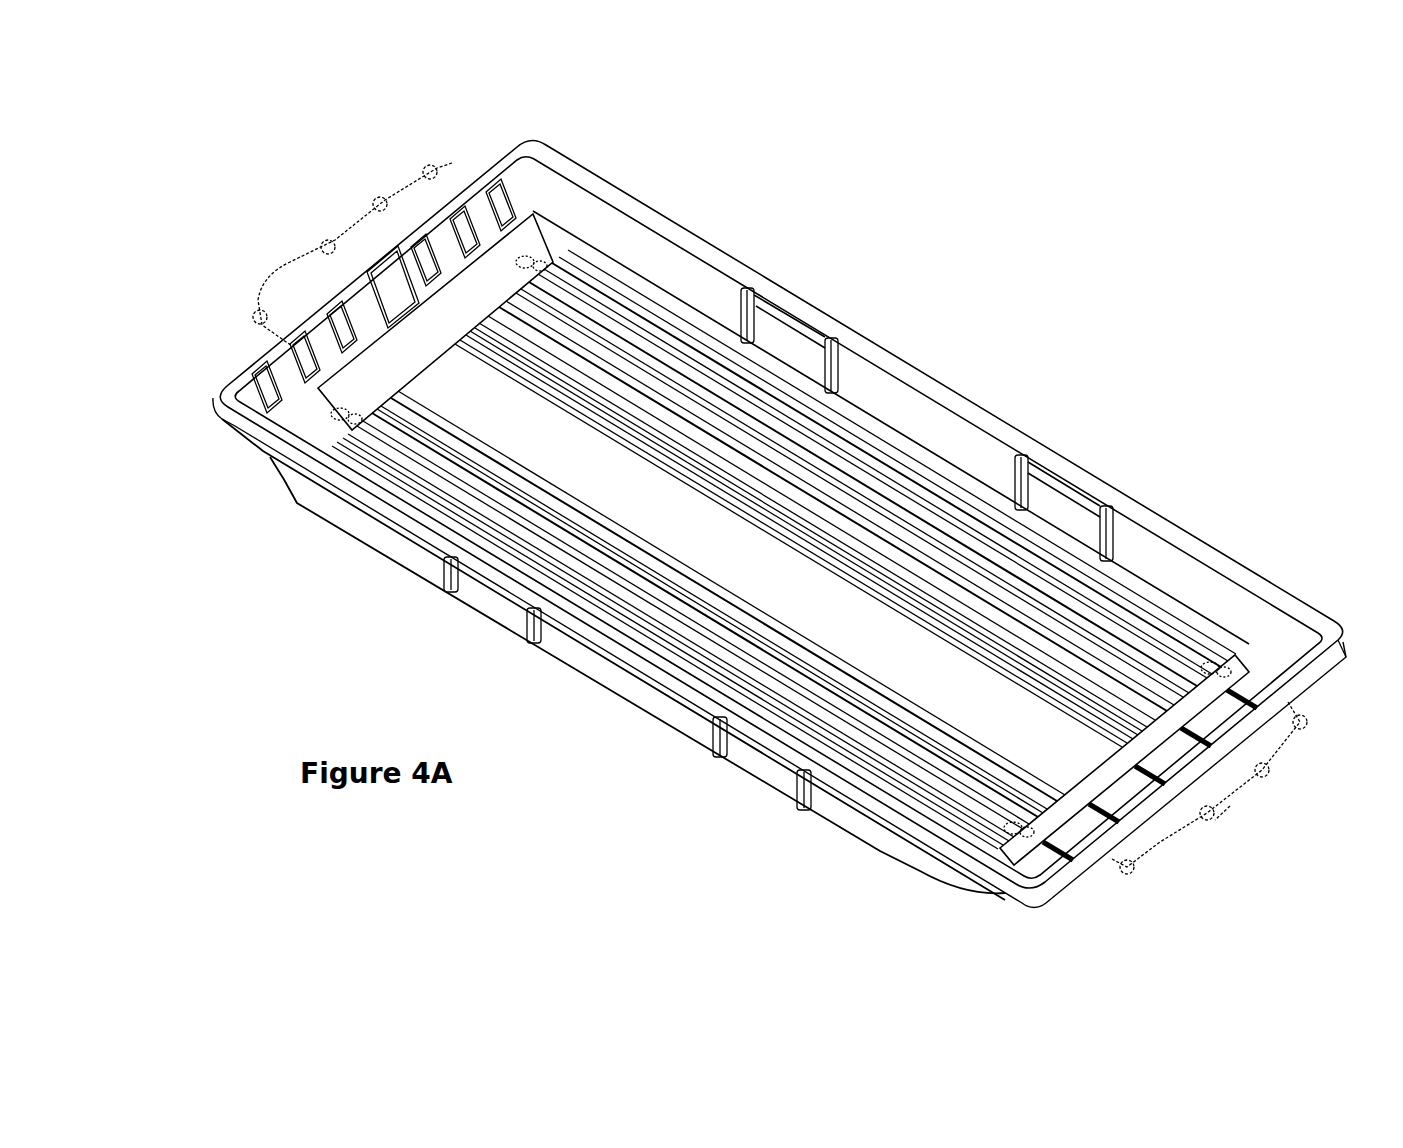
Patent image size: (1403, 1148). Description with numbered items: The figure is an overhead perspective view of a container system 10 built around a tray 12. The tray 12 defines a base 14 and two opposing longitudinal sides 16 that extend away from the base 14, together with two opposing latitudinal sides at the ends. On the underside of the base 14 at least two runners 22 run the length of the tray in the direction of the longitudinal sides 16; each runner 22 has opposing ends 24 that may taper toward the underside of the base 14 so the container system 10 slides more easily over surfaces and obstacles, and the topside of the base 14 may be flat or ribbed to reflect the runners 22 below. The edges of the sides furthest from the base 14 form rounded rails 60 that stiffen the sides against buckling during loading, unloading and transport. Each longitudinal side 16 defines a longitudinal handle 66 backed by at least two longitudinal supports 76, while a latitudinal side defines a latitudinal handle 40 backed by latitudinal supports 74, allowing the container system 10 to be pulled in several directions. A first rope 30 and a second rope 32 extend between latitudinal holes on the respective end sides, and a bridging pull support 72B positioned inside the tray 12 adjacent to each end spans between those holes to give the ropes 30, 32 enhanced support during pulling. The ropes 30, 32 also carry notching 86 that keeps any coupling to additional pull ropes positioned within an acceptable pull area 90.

The container system 10 is at (1066, 212).
The tray 12 is at (652, 202).
The base 14 is at (783, 563).
The longitudinal sides 16 is at (891, 427).
The runners 22 is at (424, 507).
The opposing ends 24 is at (458, 257).
The first rope 30 is at (1150, 870).
The second rope 32 is at (265, 278).
The latitudinal handle 40 is at (402, 271).
The rounded rails 60 is at (1324, 655).
The longitudinal handle 66 is at (797, 322).
The bridging pull support 72B is at (1236, 663).
The latitudinal supports 74 is at (1292, 674).
The longitudinal supports 76 is at (840, 357).
The notching 86 is at (1301, 730).
The pull area 90 is at (1238, 803).